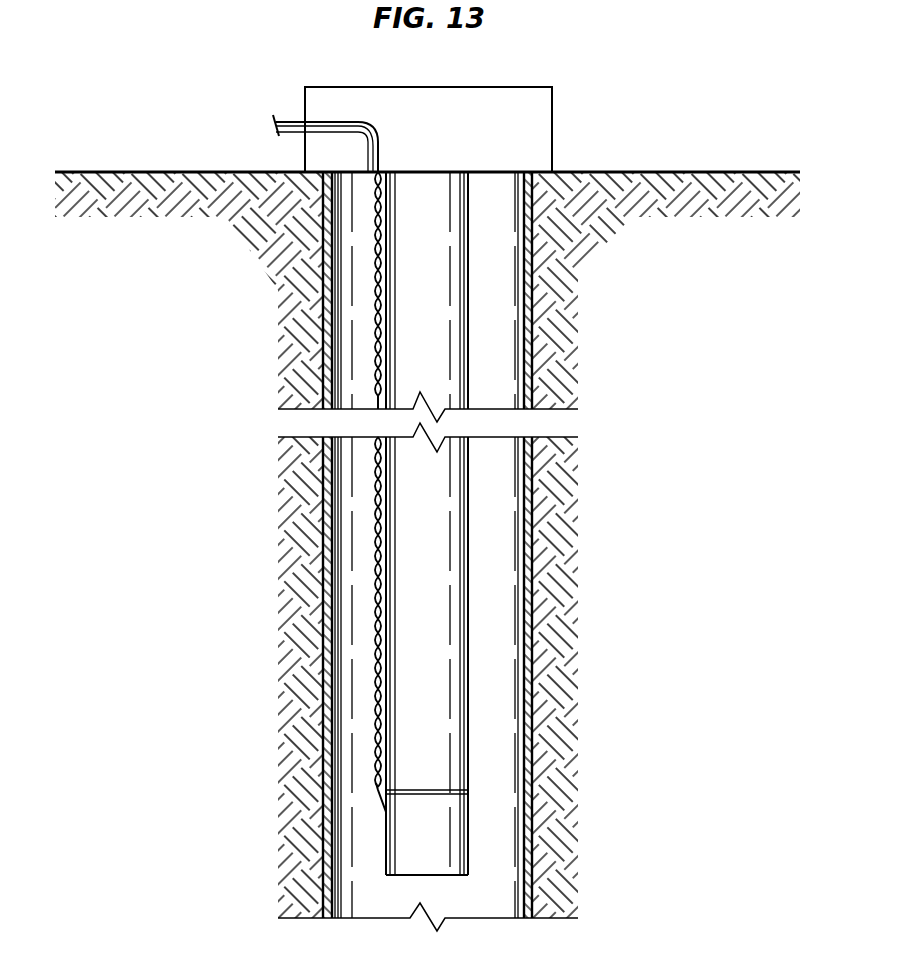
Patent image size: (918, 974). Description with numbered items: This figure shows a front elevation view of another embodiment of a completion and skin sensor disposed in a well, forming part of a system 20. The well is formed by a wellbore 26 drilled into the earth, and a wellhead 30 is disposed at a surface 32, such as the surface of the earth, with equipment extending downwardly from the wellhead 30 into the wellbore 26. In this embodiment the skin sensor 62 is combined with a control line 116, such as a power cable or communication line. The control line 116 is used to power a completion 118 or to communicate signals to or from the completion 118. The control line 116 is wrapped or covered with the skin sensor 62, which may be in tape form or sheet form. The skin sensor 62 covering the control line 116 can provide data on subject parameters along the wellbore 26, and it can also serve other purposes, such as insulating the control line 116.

The system 20 is at (311, 507).
The wellbore 26 is at (500, 576).
The wellhead 30 is at (553, 131).
The surface 32 is at (745, 170).
The skin sensor 62 is at (375, 572).
The control line 116 is at (372, 782).
The completion 118 is at (442, 839).